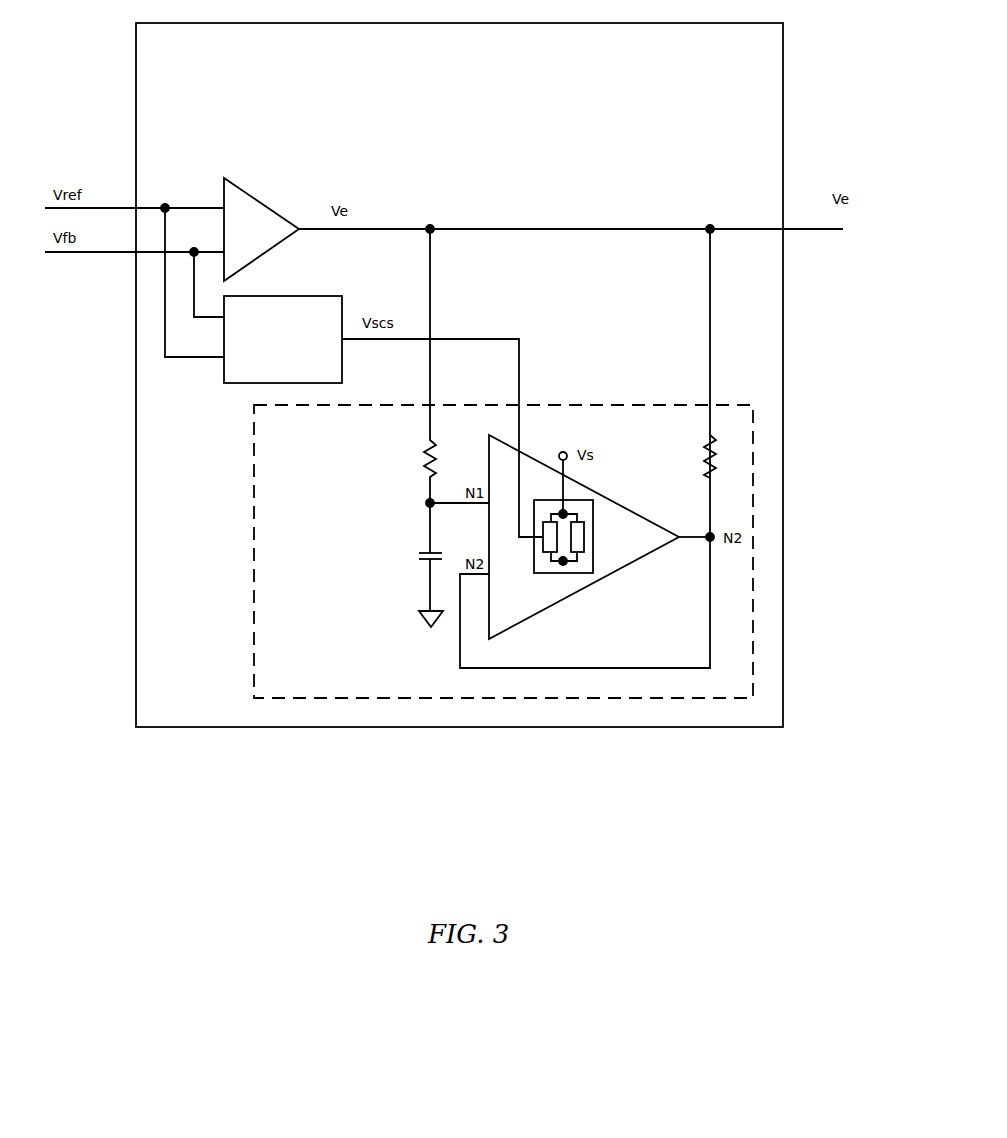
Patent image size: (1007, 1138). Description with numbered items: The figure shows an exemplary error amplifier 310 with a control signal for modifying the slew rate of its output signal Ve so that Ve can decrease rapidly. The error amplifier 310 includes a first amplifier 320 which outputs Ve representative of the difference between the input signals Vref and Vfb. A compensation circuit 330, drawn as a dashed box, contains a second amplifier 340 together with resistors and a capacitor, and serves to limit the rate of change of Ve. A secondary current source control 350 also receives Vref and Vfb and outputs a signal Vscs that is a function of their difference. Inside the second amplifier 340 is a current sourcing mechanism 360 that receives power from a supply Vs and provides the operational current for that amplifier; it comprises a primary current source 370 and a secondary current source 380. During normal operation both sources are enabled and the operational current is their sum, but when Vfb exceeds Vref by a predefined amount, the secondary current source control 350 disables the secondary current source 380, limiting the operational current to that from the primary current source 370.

The error amplifier 310 is at (459, 375).
The amplifier 320 is at (272, 208).
The compensation circuit 330 is at (503, 551).
The amplifier 340 is at (645, 559).
The secondary current source control 350 is at (283, 339).
The current sourcing mechanism 360 is at (593, 507).
The primary current source 370 is at (584, 541).
The secondary current source 380 is at (543, 552).